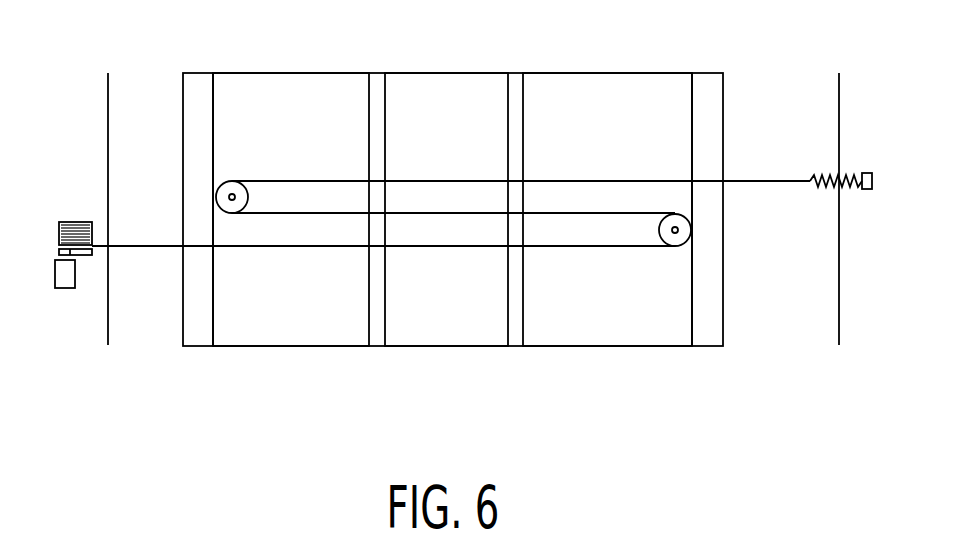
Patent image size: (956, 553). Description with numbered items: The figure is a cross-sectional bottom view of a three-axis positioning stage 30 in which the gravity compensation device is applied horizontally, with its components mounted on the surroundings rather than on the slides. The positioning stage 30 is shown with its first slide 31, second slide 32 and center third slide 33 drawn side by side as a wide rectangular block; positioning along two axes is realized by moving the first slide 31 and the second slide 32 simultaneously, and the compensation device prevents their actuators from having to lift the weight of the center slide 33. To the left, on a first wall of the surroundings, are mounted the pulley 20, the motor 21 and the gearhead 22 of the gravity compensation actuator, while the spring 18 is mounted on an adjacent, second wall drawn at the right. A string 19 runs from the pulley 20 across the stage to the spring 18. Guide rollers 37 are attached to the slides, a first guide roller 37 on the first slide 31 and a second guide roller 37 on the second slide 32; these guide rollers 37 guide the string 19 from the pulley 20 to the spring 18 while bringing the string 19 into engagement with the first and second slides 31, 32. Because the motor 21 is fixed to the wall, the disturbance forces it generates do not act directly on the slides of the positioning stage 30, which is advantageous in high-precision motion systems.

The spring 18 is at (862, 172).
The string 19 is at (632, 179).
The pulley 20 is at (74, 222).
The motor 21 is at (62, 288).
The gearhead 22 is at (85, 256).
The positioning stage 30 is at (121, 396).
The first slide 31 is at (301, 90).
The second slide 32 is at (608, 90).
The third slide 33 is at (454, 90).
The guide rollers 37 is at (232, 193).